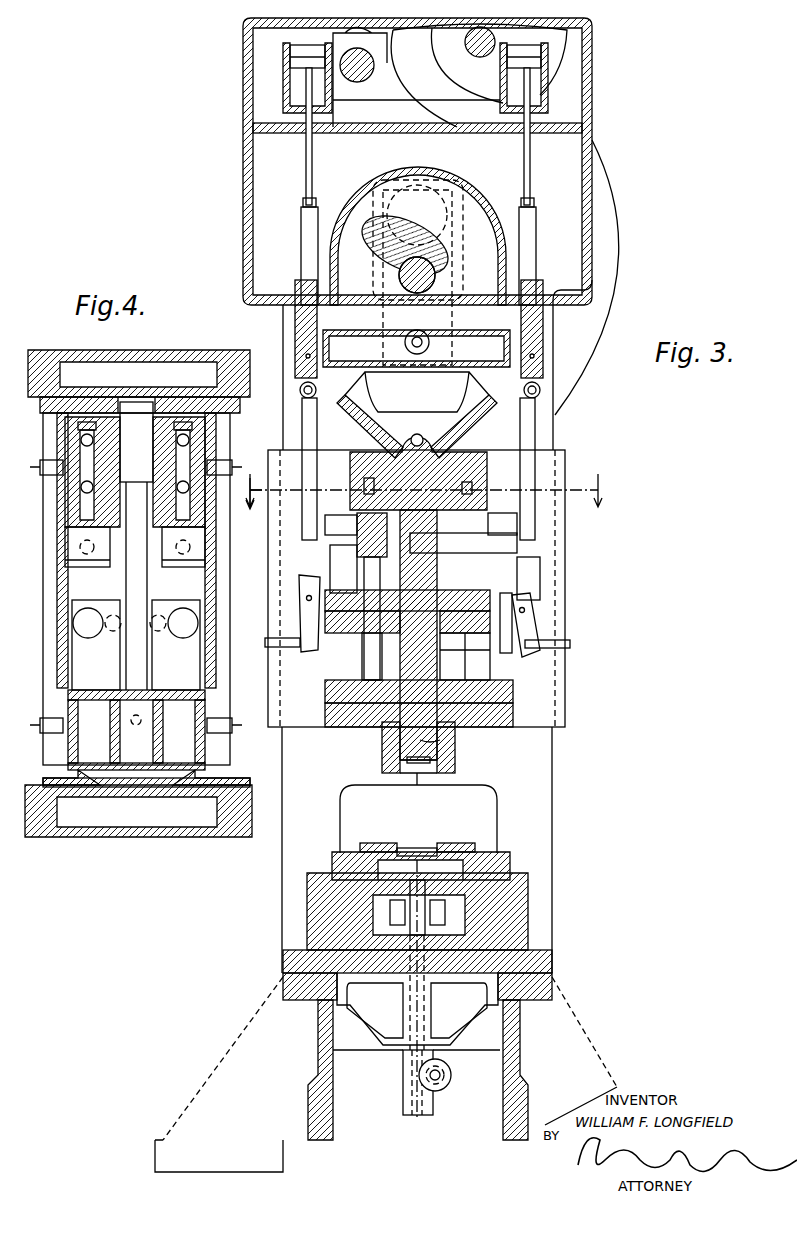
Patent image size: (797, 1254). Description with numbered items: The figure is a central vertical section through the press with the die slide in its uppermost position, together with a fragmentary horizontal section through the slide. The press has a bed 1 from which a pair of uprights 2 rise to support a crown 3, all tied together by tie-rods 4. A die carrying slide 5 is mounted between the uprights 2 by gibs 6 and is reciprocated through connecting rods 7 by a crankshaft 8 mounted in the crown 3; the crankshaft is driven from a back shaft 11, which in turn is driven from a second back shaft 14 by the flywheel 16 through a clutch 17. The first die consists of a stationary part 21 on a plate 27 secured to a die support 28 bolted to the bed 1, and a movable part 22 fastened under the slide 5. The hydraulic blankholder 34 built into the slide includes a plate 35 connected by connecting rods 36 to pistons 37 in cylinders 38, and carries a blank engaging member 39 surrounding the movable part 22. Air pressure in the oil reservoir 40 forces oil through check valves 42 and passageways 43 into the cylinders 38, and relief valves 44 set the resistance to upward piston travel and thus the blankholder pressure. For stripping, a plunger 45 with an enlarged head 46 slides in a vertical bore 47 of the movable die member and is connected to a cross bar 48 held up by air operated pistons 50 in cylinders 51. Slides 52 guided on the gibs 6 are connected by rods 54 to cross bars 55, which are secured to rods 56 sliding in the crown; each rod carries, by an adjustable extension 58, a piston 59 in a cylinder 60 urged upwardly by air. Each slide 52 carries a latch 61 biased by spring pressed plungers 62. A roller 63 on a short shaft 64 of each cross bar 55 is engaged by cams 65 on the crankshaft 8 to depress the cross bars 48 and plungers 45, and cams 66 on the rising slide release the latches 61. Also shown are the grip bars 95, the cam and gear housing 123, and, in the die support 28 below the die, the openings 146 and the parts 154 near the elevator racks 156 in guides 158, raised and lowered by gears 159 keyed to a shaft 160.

In FIG. 3, the bed 1 is at (318, 1058).
In FIG. 3, the uprights 2 is at (552, 822).
In FIG. 4, the uprights 2 is at (120, 350).
In FIG. 3, the crown 3 is at (594, 247).
In FIG. 3, the tie-rods 4 is at (424, 481).
In FIG. 4, the tie-rods 4 is at (253, 484).
In FIG. 3, the die carrying slide 5 is at (345, 630).
In FIG. 4, the die carrying slide 5 is at (50, 640).
In FIG. 3, the gibs 6 is at (553, 510).
In FIG. 4, the gibs 6 is at (45, 405).
In FIG. 3, the connecting rods 7 is at (380, 380).
In FIG. 3, the crankshaft 8 is at (436, 275).
In FIG. 3, the back shaft 11 is at (357, 82).
In FIG. 3, the second back shaft 14 is at (465, 45).
In FIG. 3, the flywheel 16 is at (405, 80).
In FIG. 3, the clutch 17 is at (447, 85).
In FIG. 3, the stationary part 21 is at (437, 850).
In FIG. 3, the movable part 22 is at (400, 735).
In FIG. 3, the plate 27 is at (505, 872).
In FIG. 3, the die support 28 is at (530, 938).
In FIG. 3, the blankholder 34 is at (380, 762).
In FIG. 3, the plate 35 is at (490, 690).
In FIG. 3, the connecting rods 36 is at (364, 665).
In FIG. 3, the pistons 37 is at (380, 580).
In FIG. 3, the cylinders 38 is at (435, 540).
In FIG. 4, the cylinders 38 is at (80, 445).
In FIG. 3, the blank engaging member 39 is at (430, 760).
In FIG. 4, the oil reservoir 40 is at (68, 688).
In FIG. 4, the check valves 42 is at (88, 630).
In FIG. 3, the passageways 43 is at (364, 482).
In FIG. 4, the passageways 43 is at (80, 500).
In FIG. 4, the relief valves 44 is at (162, 535).
In FIG. 3, the plunger 45 is at (455, 665).
In FIG. 4, the plunger 45 is at (134, 470).
In FIG. 3, the enlarged head 46 is at (417, 785).
In FIG. 3, the vertical bore 47 is at (445, 740).
In FIG. 3, the cross bar 48 is at (500, 525).
In FIG. 4, the cross bar 48 is at (40, 468).
In FIG. 3, the air operated pistons 50 is at (510, 60).
In FIG. 3, the cylinders 51 is at (542, 600).
In FIG. 3, the slides 52 is at (540, 612).
In FIG. 3, the rods 54 is at (302, 440).
In FIG. 3, the cross bars 55 is at (535, 350).
In FIG. 3, the rods 56 is at (301, 238).
In FIG. 3, the adjustable extension 58 is at (306, 182).
In FIG. 3, the piston 59 is at (295, 66).
In FIG. 3, the cylinder 60 is at (290, 92).
In FIG. 3, the latch 61 is at (560, 640).
In FIG. 3, the spring pressed plungers 62 is at (280, 645).
In FIG. 3, the roller 63 is at (405, 345).
In FIG. 3, the short shaft 64 is at (412, 340).
In FIG. 3, the cams 65 is at (372, 235).
In FIG. 3, the cams 66 is at (540, 567).
In FIG. 3, the bars 95 is at (375, 843).
In FIG. 3, the cam and gear housing 123 is at (612, 307).
In FIG. 3, the opening 146 is at (385, 985).
In FIG. 3, the clamp 154 is at (390, 912).
In FIG. 3, the racks 156 is at (415, 1115).
In FIG. 3, the guides 158 is at (432, 1018).
In FIG. 3, the gears 159 is at (440, 1088).
In FIG. 3, the shaft 160 is at (451, 1075).